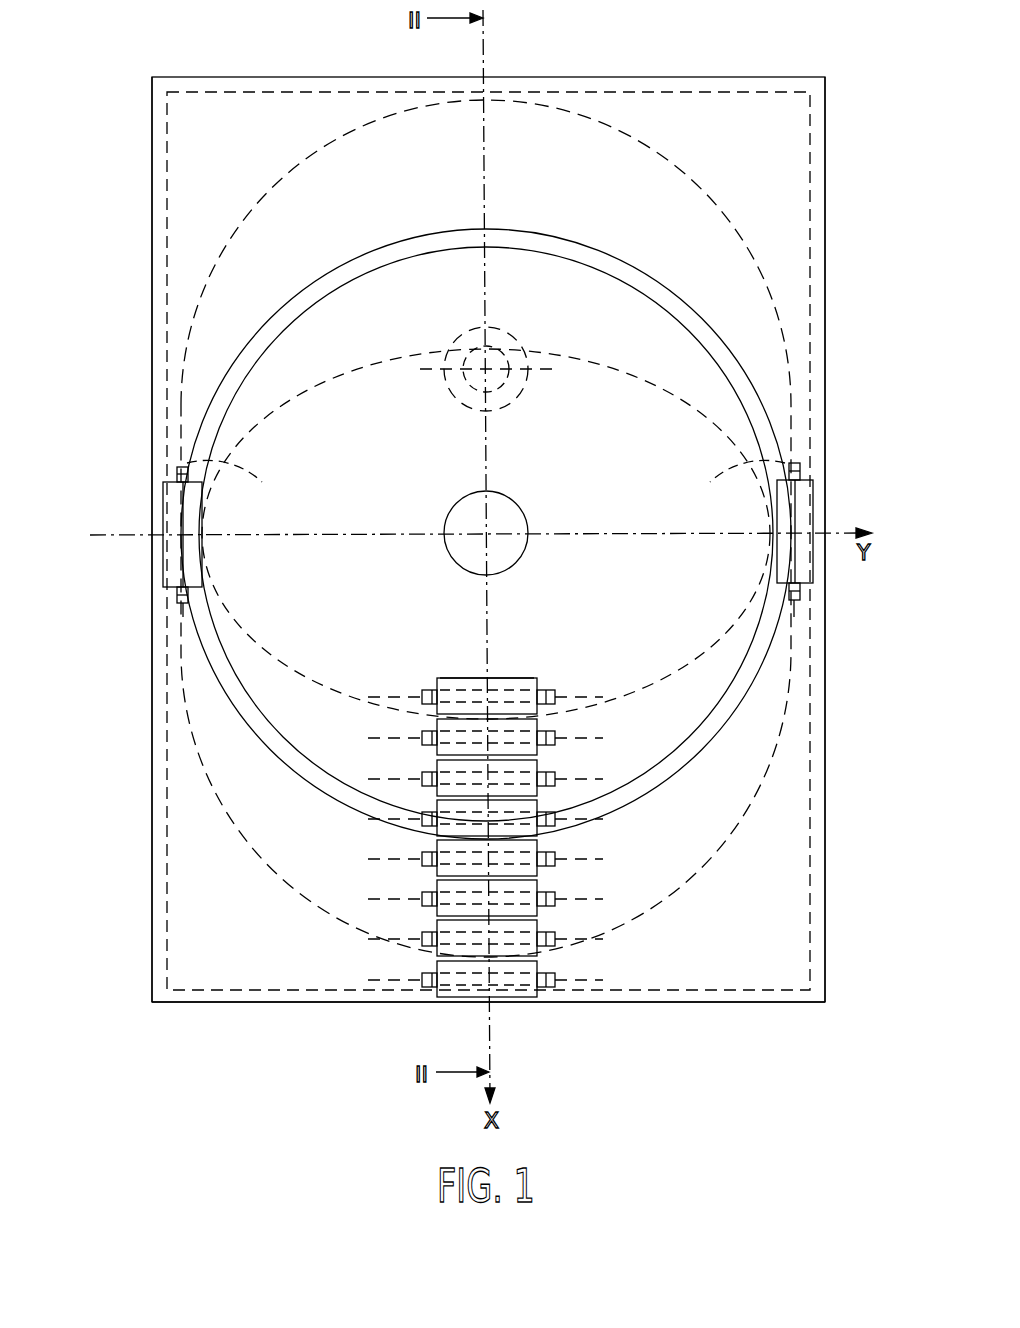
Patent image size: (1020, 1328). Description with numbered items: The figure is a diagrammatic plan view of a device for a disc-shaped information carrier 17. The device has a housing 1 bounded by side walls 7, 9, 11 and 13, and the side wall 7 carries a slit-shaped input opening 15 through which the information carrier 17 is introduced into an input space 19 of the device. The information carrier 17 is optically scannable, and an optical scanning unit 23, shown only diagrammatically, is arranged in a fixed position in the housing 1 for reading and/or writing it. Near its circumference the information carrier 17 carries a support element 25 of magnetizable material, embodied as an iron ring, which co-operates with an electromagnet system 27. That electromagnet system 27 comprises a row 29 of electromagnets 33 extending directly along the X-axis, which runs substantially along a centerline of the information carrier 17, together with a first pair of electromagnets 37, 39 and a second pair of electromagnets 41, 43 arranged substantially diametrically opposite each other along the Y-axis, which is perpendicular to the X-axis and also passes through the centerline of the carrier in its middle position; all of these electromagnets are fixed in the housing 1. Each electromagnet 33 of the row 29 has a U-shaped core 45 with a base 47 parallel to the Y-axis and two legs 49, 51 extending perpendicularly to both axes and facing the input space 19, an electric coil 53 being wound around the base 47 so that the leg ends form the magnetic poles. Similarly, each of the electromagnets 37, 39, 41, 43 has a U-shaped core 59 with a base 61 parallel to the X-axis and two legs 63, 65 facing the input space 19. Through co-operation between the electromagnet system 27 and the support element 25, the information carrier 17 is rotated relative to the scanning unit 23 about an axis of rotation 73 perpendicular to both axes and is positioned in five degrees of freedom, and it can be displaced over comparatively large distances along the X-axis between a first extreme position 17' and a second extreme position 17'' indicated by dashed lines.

The housing 1 is at (163, 1040).
The side wall 7 is at (488, 1038).
The input opening 15 is at (285, 1002).
The side wall 9 is at (152, 779).
The side wall 11 is at (572, 77).
The side wall 13 is at (826, 715).
The input space 19 is at (168, 875).
The information carrier 17 is at (486, 534).
The first extreme position 17' is at (499, 613).
The second extreme position 17'' is at (486, 528).
The support element 25 is at (676, 765).
The optical scanning unit 23 is at (505, 336).
The axis of rotation 73 is at (489, 531).
The electromagnet system 27 is at (139, 480).
The row of electromagnets 29 is at (600, 908).
The electromagnet 41 is at (135, 536).
The electromagnet 43 is at (165, 571).
The electromagnet 37 is at (847, 540).
The electromagnet 39 is at (812, 567).
The U-shaped core 59 is at (488, 555).
The base 61 is at (165, 510).
The leg 63 is at (486, 484).
The leg 65 is at (175, 614).
The electromagnet 33 is at (490, 802).
The U-shaped core 45 is at (502, 660).
The base 47 is at (505, 690).
The leg 49 is at (560, 690).
The leg 51 is at (416, 690).
The electric coil 53 is at (452, 678).